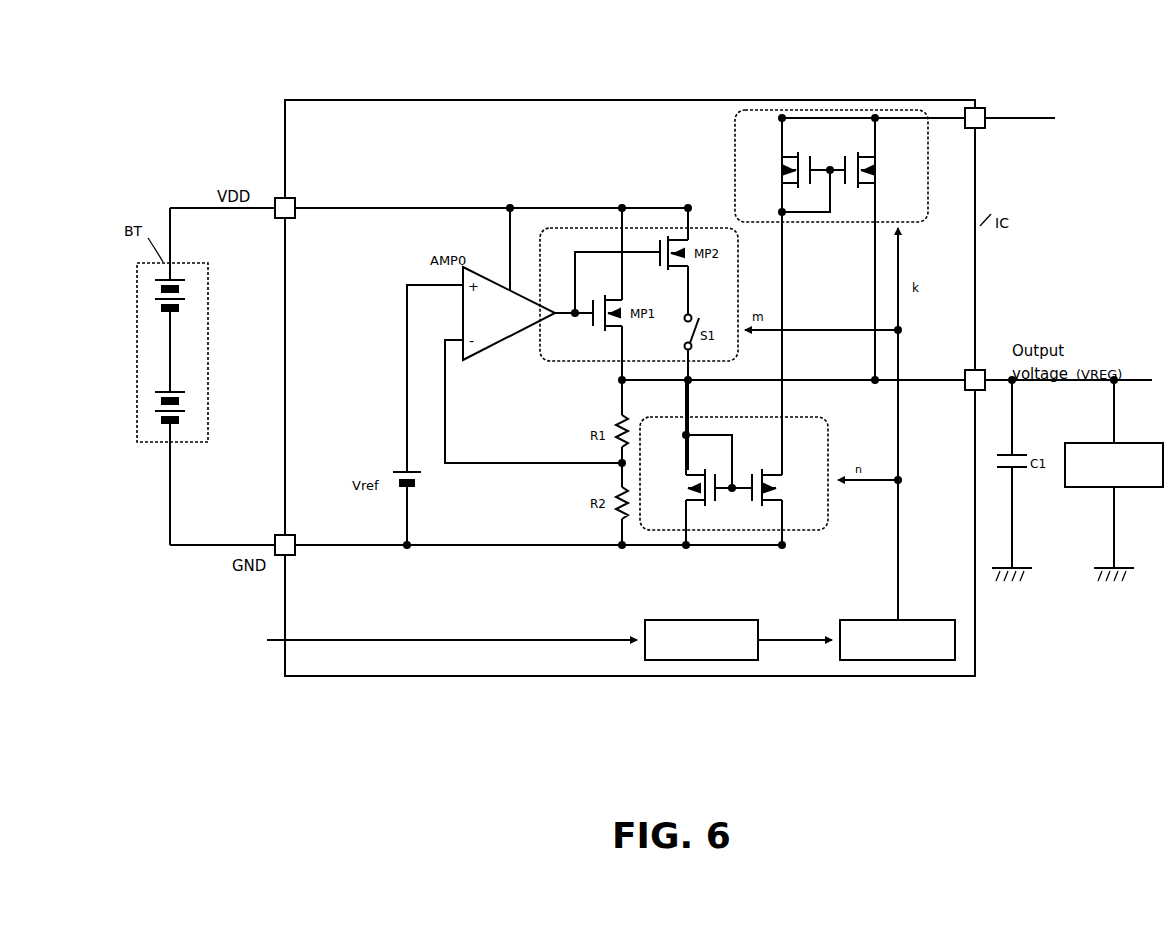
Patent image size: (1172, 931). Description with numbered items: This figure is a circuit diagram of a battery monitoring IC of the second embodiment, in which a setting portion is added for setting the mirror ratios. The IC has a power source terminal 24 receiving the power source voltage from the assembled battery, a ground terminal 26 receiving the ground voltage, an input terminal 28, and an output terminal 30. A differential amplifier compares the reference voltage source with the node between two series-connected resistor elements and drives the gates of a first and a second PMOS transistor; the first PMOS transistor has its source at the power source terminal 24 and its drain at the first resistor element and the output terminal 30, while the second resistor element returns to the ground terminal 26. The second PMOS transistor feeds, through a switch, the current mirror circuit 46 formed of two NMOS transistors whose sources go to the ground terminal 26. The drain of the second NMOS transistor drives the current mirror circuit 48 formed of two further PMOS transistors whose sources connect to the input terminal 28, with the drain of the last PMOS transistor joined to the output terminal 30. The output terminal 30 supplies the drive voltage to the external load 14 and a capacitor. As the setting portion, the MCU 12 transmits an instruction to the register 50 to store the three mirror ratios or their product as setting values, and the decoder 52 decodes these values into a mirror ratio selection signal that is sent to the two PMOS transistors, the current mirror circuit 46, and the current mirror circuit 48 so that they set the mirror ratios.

The MCU 12 is at (422, 640).
The external load 14 is at (1135, 441).
The power source terminal 24 is at (288, 200).
The ground terminal 26 is at (288, 556).
The input terminal 28 is at (980, 110).
The output terminal 30 is at (972, 392).
The current mirror circuit 46 is at (820, 528).
The current mirror circuit 48 is at (735, 150).
The register 50 is at (697, 619).
The decoder 52 is at (918, 619).